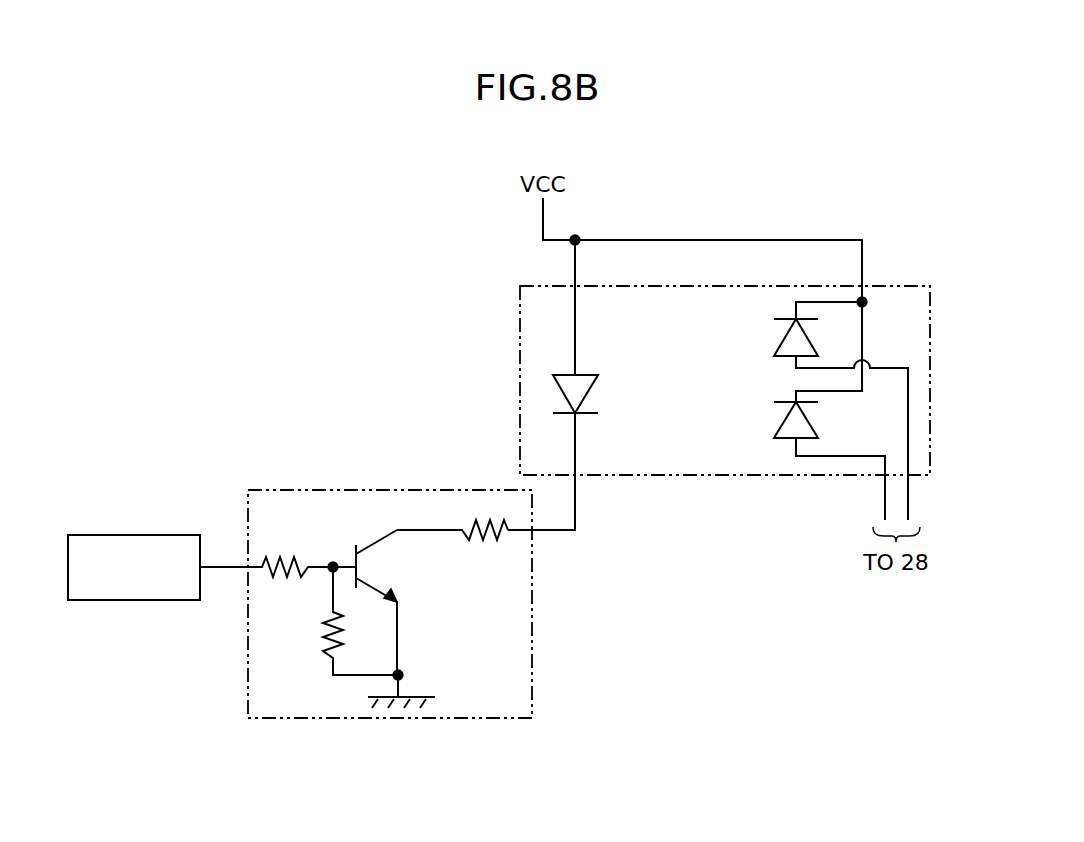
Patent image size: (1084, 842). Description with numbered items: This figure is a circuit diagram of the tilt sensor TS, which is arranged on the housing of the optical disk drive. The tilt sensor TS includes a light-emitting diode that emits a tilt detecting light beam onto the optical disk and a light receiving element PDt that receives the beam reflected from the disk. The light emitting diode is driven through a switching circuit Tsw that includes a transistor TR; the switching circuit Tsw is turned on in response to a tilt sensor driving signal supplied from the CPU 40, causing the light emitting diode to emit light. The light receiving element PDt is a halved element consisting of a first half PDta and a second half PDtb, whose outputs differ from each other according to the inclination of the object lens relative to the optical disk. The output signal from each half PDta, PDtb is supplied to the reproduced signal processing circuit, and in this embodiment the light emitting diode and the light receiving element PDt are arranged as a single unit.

The CPU 40 is at (132, 600).
The tilt sensor TS is at (540, 285).
The switching circuit Tsw is at (288, 490).
The transistor TR is at (365, 594).
The light receiving element PDt is at (700, 296).
The first half PDta is at (787, 336).
The second half PDtb is at (787, 420).